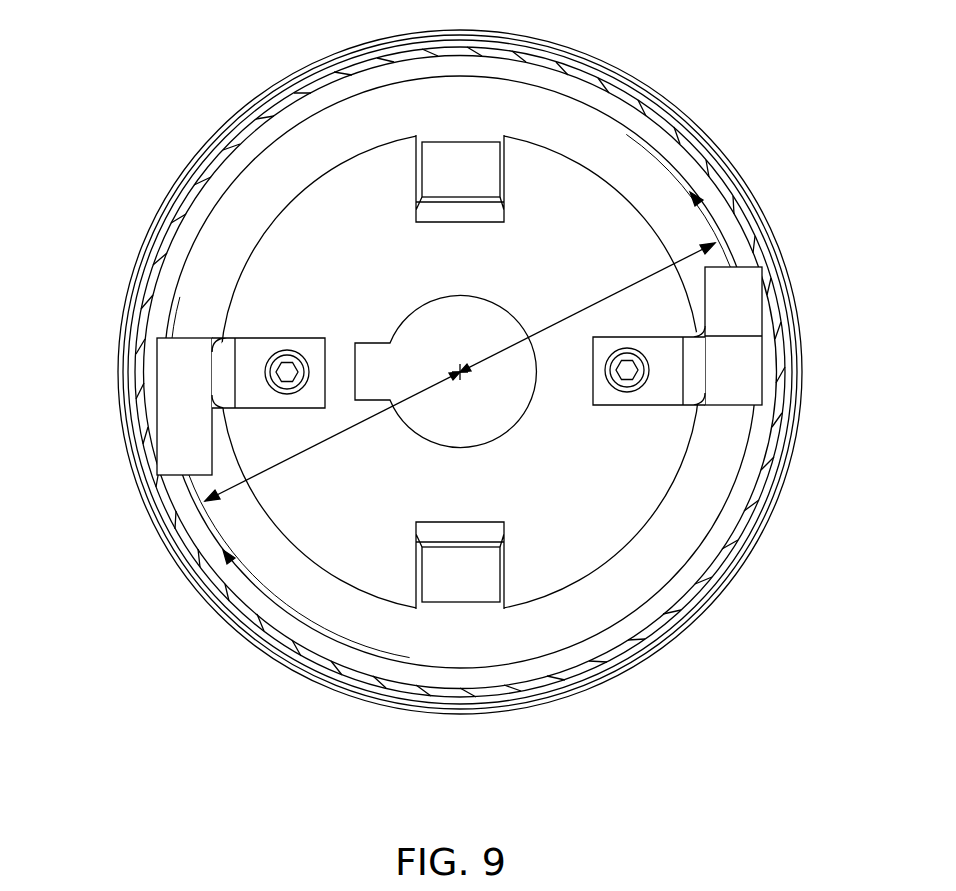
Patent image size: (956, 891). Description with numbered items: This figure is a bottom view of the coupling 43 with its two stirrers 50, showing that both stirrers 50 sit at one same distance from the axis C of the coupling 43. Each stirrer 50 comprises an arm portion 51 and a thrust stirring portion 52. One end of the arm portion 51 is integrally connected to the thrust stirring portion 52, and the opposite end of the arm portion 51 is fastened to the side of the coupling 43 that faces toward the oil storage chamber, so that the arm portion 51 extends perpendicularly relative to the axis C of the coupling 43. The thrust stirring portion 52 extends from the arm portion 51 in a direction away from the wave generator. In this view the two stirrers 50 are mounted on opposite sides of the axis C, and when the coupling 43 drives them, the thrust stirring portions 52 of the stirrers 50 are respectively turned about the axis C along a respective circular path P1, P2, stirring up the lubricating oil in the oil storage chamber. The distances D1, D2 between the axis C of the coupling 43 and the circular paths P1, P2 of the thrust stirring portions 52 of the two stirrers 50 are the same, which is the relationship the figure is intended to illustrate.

The coupling 43 is at (320, 235).
The stirrer 50 is at (444, 406).
The arm portion 51 is at (252, 353).
The thrust stirring portion 52 is at (182, 365).
The circular path P1 is at (207, 532).
The circular path P2 is at (708, 212).
The distance D1 is at (317, 450).
The distance D2 is at (605, 300).
The axis C is at (462, 375).